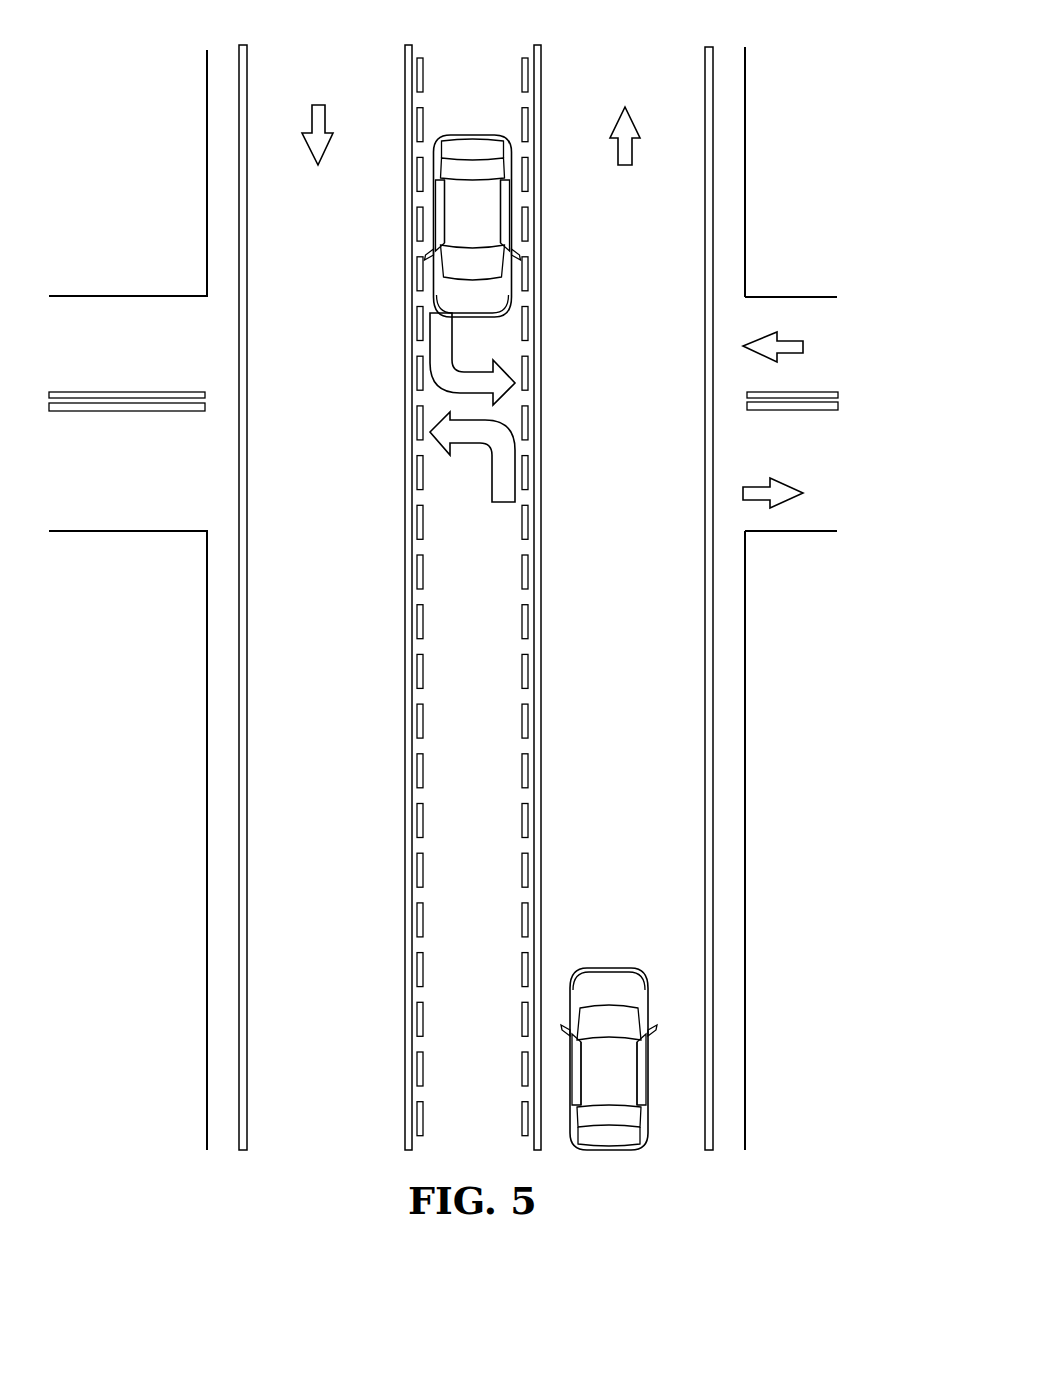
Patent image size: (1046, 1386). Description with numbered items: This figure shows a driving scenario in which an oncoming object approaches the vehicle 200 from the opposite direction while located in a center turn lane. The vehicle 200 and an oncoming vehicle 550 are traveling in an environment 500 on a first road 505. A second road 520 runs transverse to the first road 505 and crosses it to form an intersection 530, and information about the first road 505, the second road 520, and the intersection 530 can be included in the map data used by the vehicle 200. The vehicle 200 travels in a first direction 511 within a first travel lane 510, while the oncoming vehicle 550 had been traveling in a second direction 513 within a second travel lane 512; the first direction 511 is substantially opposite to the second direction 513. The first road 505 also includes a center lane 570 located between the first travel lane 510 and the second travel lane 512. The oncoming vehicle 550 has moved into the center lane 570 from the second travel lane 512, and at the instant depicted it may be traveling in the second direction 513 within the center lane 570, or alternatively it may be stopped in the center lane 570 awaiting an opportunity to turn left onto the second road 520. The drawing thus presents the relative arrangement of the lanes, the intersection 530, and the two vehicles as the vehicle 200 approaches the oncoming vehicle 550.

The environment 500 is at (667, 39).
The first road 505 is at (747, 843).
The first travel lane 510 is at (635, 780).
The first direction 511 is at (632, 150).
The second travel lane 512 is at (333, 780).
The second direction 513 is at (308, 123).
The second road 520 is at (790, 297).
The intersection 530 is at (184, 283).
The oncoming vehicle 550 is at (497, 198).
The center lane 570 is at (490, 780).
The vehicle 200 is at (648, 1082).